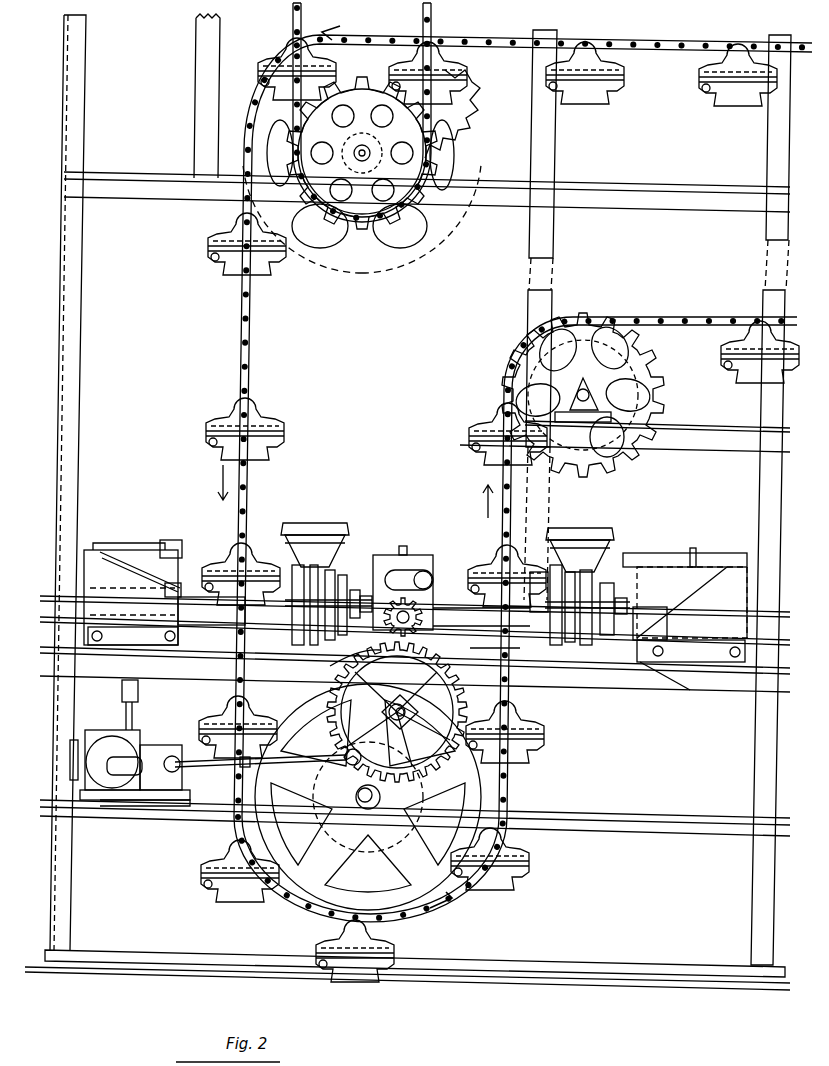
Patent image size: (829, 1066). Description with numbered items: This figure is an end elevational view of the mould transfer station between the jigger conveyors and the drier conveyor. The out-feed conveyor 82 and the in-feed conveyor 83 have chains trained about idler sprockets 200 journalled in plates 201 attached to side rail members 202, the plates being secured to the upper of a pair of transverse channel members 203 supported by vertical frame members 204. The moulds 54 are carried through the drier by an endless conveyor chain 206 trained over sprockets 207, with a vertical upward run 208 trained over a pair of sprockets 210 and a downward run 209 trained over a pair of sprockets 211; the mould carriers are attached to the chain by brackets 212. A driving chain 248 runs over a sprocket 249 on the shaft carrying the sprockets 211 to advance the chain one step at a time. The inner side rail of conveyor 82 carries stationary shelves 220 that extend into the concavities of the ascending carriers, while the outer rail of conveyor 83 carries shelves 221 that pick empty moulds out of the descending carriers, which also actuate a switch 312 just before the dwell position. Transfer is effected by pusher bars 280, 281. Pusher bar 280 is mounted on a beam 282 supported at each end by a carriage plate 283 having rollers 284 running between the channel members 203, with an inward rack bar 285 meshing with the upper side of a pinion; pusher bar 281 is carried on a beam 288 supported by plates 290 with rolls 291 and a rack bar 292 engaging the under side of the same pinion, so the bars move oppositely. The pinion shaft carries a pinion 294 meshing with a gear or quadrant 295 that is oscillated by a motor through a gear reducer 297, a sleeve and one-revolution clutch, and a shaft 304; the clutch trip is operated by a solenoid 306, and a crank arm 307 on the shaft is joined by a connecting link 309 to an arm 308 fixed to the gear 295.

The moulds 54 is at (584, 96).
The out-feed conveyor 82 is at (592, 572).
The in-feed conveyor 83 is at (328, 566).
The idler sprockets 200 is at (456, 626).
The plates 201 is at (330, 580).
The side rail members 202 is at (610, 588).
The channel members 203 is at (512, 647).
The vertical frame members 204 is at (72, 492).
The endless conveyor chain 206 is at (250, 346).
The sprockets 207 is at (340, 854).
The vertical upward run 208 is at (485, 510).
The downward vertical run 209 is at (222, 468).
The sprockets 210 is at (662, 380).
The sprockets 211 is at (470, 127).
The brackets 212 is at (226, 218).
The stationary shelves 220 is at (556, 566).
The shelves 221 is at (288, 591).
The driving chain 248 is at (436, 30).
The sprocket 249 is at (308, 78).
The pusher bar 280 is at (136, 545).
The pusher bar 281 is at (704, 560).
The beam 282 is at (140, 574).
The plate 283 is at (131, 597).
The rollers 284 is at (182, 640).
The rack bar 285 is at (400, 556).
The beam 288 is at (668, 600).
The plates 290 is at (692, 602).
The rolls 291 is at (690, 690).
The rack bar 292 is at (644, 662).
The pinion 294 is at (432, 586).
The gear or quadrant 295 is at (340, 664).
The gear reducer 297 is at (112, 732).
The shaft 304 is at (176, 758).
The solenoid 306 is at (126, 690).
The crank arm 307 is at (150, 744).
The arm 308 is at (382, 712).
The connecting link 309 is at (322, 736).
The switch 312 is at (184, 530).